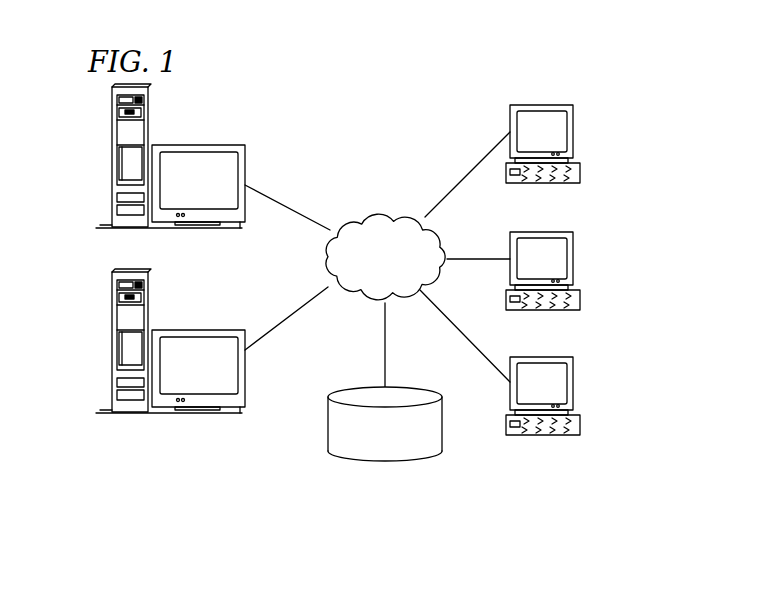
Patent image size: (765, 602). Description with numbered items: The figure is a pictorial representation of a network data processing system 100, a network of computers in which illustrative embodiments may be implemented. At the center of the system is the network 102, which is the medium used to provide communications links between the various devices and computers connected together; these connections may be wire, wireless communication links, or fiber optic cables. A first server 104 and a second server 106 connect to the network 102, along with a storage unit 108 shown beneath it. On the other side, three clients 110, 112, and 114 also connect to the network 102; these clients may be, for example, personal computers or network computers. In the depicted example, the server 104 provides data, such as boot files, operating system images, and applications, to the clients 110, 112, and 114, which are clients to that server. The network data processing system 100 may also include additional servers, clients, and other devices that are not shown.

The network data processing system 100 is at (433, 109).
The network 102 is at (360, 214).
The server 104 is at (112, 158).
The server 106 is at (112, 343).
The storage unit 108 is at (370, 462).
The client 110 is at (573, 131).
The client 112 is at (573, 257).
The client 114 is at (573, 382).